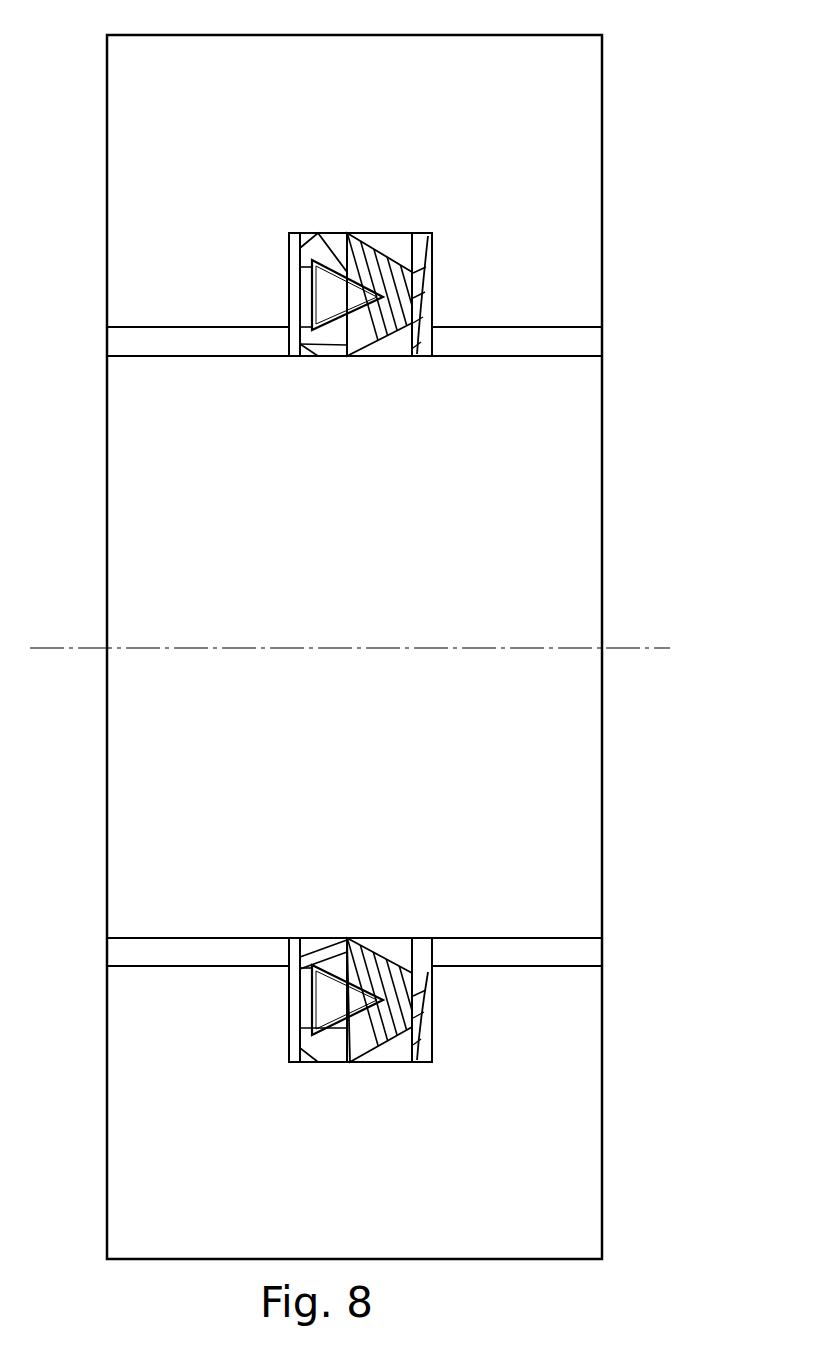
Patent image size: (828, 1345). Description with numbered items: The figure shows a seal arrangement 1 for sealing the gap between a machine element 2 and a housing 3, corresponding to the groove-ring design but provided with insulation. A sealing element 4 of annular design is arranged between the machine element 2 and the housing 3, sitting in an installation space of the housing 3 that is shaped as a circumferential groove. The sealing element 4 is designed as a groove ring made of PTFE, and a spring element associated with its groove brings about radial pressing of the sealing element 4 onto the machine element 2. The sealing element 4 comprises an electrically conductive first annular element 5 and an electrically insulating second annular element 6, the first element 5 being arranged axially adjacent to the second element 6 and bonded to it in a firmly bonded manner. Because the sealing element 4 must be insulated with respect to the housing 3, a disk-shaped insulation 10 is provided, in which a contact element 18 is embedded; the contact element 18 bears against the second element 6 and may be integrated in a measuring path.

The seal arrangement 1 is at (640, 237).
The machine element 2 is at (582, 440).
The housing 3 is at (539, 105).
The sealing element 4 is at (358, 246).
The first annular element 5 is at (400, 273).
The second annular element 6 is at (335, 240).
The disk-shaped insulation 10 is at (421, 233).
The contact element 18 is at (432, 266).